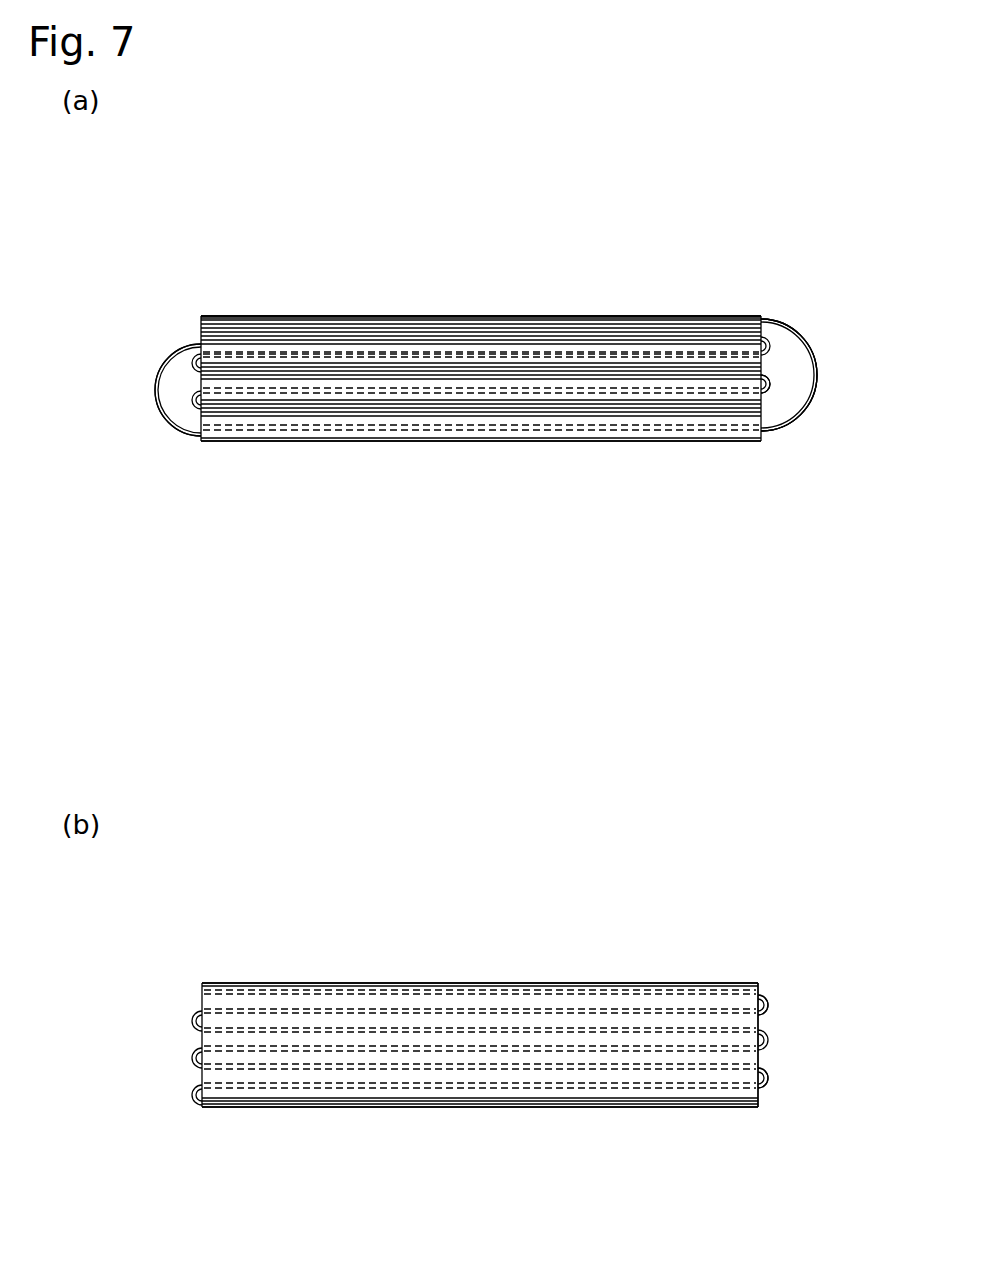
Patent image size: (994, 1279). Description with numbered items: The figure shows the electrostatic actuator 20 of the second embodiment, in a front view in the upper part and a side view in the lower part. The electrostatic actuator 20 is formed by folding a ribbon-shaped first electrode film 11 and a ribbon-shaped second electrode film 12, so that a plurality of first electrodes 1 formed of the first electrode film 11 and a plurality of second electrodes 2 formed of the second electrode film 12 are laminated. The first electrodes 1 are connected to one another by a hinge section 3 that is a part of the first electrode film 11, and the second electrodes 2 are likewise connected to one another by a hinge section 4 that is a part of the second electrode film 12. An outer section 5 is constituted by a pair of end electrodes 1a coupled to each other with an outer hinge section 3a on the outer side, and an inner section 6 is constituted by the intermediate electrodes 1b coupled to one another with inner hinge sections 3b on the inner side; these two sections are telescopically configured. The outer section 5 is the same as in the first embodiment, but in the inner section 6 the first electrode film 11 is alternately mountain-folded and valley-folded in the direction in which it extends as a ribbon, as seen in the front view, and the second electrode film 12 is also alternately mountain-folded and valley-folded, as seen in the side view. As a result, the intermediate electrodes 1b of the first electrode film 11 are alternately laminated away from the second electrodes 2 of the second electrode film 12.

The first electrode 1 is at (762, 215).
The end electrode 1a is at (556, 316).
The intermediate electrode 1b is at (724, 347).
The second electrode 2 is at (448, 356).
The hinge section 3 is at (78, 340).
The outer hinge section 3a is at (162, 351).
The inner hinge section 3b is at (194, 363).
The hinge section 4 is at (360, 414).
The outer section 5 is at (813, 428).
The inner section 6 is at (777, 410).
The first electrode film 11 is at (787, 323).
The second electrode film 12 is at (663, 432).
The electrostatic actuator 20 is at (825, 269).